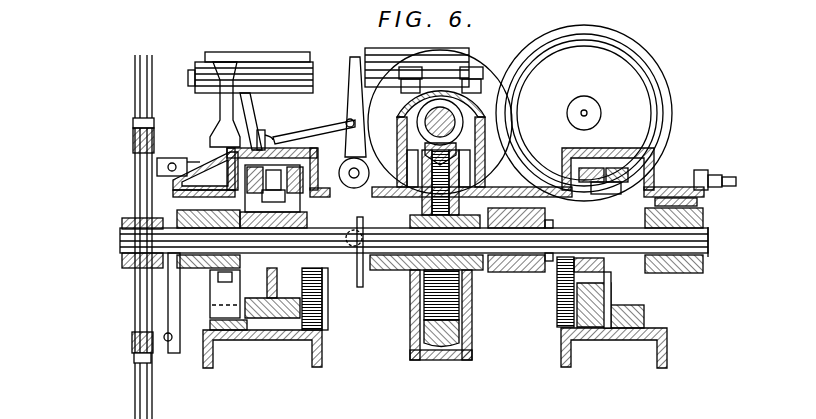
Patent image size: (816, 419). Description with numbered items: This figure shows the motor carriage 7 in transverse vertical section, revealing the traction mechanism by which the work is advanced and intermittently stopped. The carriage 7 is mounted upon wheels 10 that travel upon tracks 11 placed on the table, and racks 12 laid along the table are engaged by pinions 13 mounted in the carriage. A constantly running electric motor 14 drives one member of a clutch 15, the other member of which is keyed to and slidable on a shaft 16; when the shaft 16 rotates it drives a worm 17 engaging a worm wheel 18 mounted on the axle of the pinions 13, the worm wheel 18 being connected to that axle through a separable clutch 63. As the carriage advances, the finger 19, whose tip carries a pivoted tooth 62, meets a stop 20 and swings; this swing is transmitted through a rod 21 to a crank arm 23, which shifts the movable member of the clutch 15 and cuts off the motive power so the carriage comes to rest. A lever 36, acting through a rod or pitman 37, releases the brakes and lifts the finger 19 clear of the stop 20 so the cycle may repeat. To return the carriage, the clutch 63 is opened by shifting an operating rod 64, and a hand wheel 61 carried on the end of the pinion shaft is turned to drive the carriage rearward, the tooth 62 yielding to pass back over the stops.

The carriage 7 is at (616, 148).
The wheels 10 is at (327, 325).
The tracks 11 is at (322, 367).
The racks 12 is at (257, 340).
The pinions 13 is at (247, 333).
The motor 14 is at (632, 62).
The clutch 15 is at (465, 62).
The shaft 16 is at (454, 123).
The worm 17 is at (462, 137).
The worm wheel 18 is at (437, 340).
The finger 19 is at (212, 146).
The stop 20 is at (202, 317).
The rod 21 is at (268, 130).
The crank arm 23 is at (226, 126).
The lever 36 is at (173, 285).
The rod or pitman 37 is at (170, 177).
The hand wheel 61 is at (133, 152).
The tooth 62 is at (223, 293).
The clutch 63 is at (360, 280).
The operating rod 64 is at (312, 128).